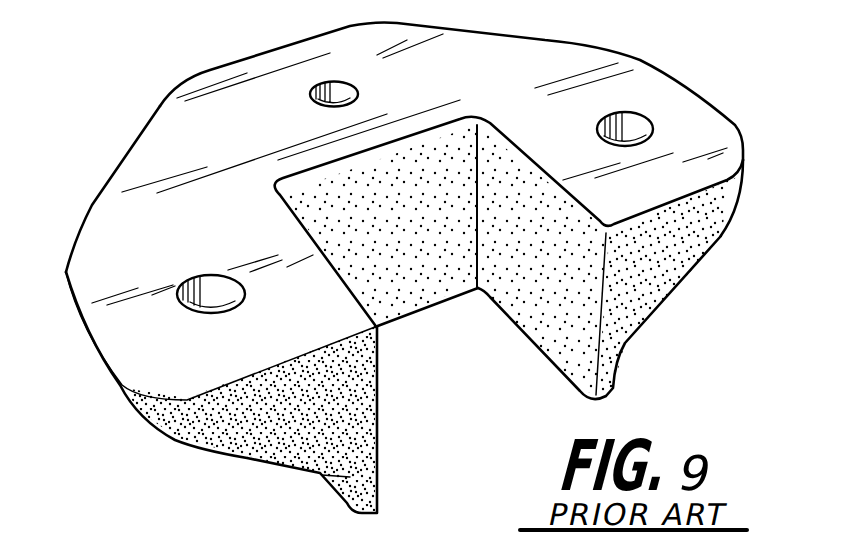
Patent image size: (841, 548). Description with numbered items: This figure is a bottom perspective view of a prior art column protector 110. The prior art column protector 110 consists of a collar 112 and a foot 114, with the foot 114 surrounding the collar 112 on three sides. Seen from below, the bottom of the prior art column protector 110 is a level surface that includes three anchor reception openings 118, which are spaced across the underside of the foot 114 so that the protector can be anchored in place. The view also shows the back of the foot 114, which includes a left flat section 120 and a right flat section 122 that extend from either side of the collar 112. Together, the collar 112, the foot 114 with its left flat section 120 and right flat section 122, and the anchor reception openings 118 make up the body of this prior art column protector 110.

The prior art column protector 110 is at (400, 259).
The collar 112 is at (626, 388).
The foot 114 is at (557, 35).
The anchor reception openings 118 is at (346, 84).
The left flat section 120 is at (290, 413).
The right flat section 122 is at (629, 262).